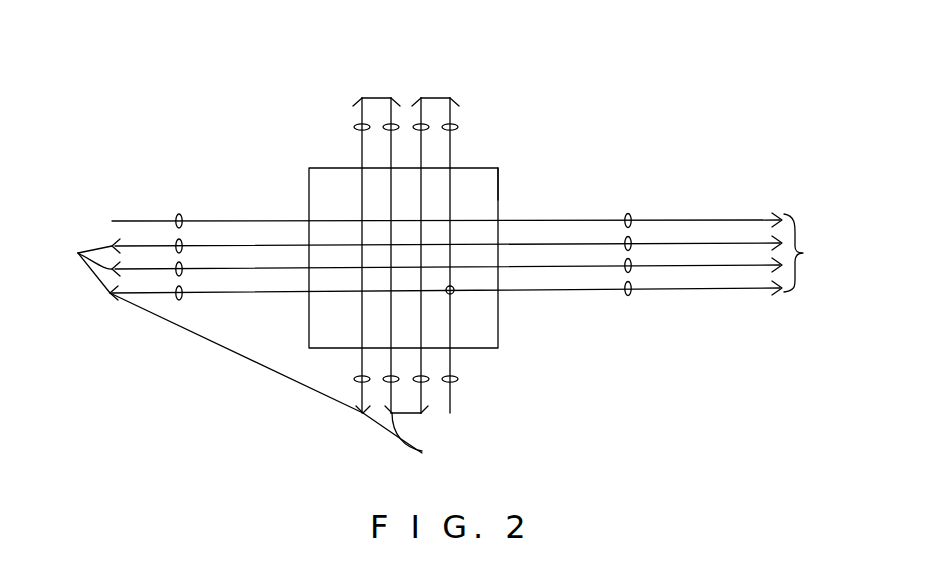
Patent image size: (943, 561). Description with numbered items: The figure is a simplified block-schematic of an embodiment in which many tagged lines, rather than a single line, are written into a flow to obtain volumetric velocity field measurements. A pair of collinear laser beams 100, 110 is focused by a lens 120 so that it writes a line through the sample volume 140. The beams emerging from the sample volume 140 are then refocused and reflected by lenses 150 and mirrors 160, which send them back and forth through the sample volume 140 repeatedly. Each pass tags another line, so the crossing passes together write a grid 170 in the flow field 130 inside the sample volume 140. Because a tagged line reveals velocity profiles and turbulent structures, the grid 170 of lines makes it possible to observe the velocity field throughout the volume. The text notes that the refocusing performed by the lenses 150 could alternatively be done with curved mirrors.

The laser beam 100 is at (434, 220).
The laser beam 110 is at (113, 221).
The lens 120 is at (181, 213).
The flow field 130 is at (358, 204).
The sample volume 140 is at (498, 172).
The lenses 150 is at (455, 124).
The mirrors 160 is at (440, 98).
The grid 170 is at (454, 293).